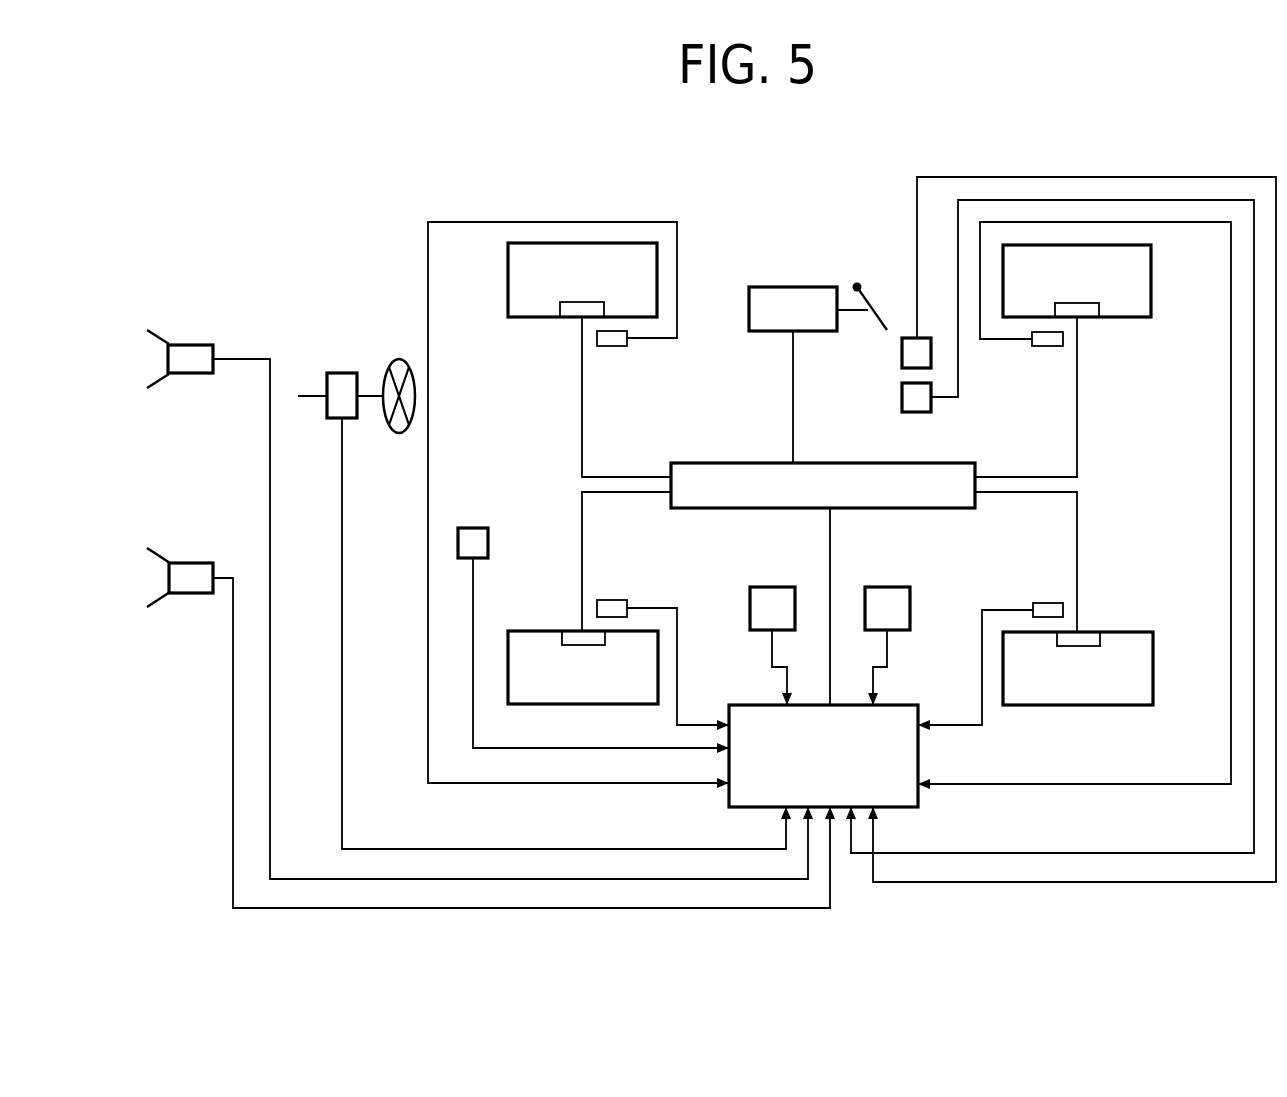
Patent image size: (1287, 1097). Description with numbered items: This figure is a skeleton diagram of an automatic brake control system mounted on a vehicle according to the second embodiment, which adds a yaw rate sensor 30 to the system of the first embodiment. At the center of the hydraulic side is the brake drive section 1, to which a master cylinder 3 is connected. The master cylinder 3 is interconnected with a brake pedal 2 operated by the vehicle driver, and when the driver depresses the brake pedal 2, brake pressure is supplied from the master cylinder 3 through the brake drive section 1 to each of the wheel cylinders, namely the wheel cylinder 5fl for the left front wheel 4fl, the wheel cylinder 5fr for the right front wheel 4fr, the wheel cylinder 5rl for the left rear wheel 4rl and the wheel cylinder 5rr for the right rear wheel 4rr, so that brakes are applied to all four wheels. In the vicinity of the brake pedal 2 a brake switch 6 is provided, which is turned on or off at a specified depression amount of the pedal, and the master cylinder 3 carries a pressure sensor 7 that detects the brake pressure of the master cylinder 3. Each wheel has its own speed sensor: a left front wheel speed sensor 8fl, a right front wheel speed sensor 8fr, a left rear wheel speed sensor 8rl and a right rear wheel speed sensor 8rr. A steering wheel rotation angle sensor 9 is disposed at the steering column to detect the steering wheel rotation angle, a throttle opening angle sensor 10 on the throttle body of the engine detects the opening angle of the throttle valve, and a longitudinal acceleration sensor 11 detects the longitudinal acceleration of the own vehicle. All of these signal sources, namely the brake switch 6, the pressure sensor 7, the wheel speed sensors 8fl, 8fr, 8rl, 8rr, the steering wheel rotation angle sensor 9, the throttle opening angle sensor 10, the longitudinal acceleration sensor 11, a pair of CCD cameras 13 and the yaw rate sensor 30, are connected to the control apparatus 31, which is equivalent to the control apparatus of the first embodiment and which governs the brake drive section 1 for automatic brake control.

The brake drive section 1 is at (728, 463).
The brake pedal 2 is at (866, 297).
The master cylinder 3 is at (793, 287).
The right front wheel 4fr is at (508, 278).
The left front wheel 4fl is at (546, 631).
The right rear wheel 4rr is at (1151, 280).
The left rear wheel 4rl is at (1080, 706).
The wheel cylinder for right front wheel 5fr is at (608, 287).
The wheel cylinder for left front wheel 5fl is at (583, 645).
The wheel cylinder for right rear wheel 5rr is at (1100, 288).
The wheel cylinder for left rear wheel 5rl is at (1078, 646).
The brake switch 6 is at (902, 352).
The pressure sensor 7 is at (902, 396).
The right front wheel speed sensor 8fr is at (620, 347).
The left front wheel speed sensor 8fl is at (637, 585).
The right rear wheel speed sensor 8rr is at (1045, 348).
The left rear wheel speed sensor 8rl is at (1045, 603).
The steering wheel rotation angle sensor 9 is at (342, 373).
The throttle opening angle sensor 10 is at (473, 528).
The longitudinal acceleration sensor 11 is at (750, 608).
The CCD cameras 13 is at (187, 345).
The yaw rate sensor 30 is at (910, 608).
The control apparatus 31 is at (893, 705).